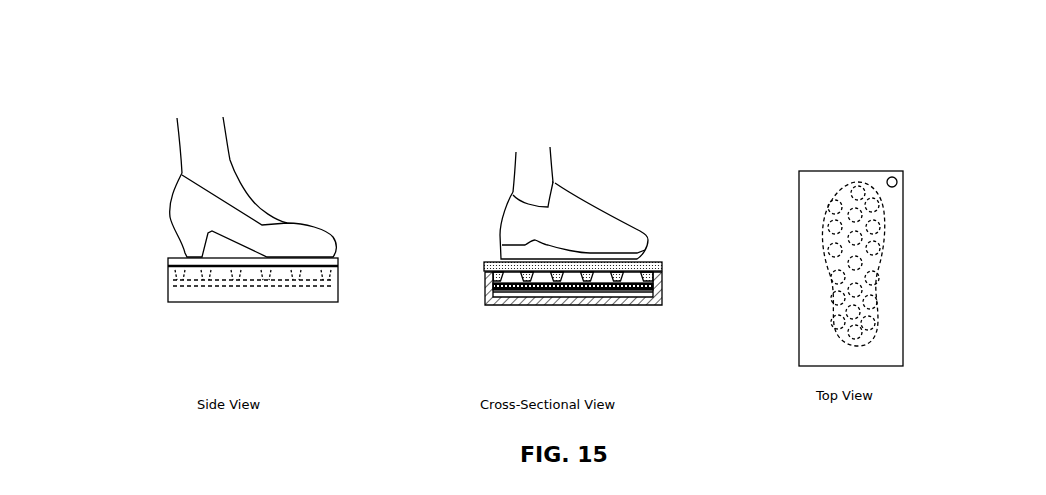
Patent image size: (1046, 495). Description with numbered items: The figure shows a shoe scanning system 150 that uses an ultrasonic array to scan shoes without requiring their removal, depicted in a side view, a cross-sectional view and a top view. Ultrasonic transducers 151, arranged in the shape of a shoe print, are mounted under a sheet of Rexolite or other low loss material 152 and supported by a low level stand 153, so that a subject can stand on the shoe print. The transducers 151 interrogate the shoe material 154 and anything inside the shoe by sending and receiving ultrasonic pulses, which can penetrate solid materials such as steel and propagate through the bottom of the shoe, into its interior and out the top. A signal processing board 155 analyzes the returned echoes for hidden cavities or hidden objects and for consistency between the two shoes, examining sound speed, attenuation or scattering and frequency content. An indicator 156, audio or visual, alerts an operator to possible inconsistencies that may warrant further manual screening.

The shoe scanning system 150 is at (631, 94).
The ultrasonic transducers 151 is at (175, 273).
The low loss material sheet 152 is at (168, 258).
The low level stand 153 is at (243, 290).
The shoe material 154 is at (292, 232).
The signal processing board 155 is at (330, 283).
The indicator 156 is at (896, 178).